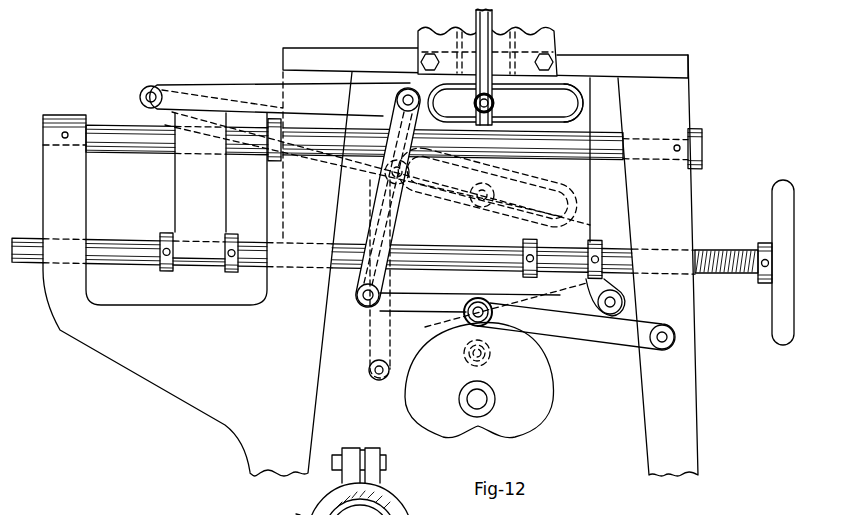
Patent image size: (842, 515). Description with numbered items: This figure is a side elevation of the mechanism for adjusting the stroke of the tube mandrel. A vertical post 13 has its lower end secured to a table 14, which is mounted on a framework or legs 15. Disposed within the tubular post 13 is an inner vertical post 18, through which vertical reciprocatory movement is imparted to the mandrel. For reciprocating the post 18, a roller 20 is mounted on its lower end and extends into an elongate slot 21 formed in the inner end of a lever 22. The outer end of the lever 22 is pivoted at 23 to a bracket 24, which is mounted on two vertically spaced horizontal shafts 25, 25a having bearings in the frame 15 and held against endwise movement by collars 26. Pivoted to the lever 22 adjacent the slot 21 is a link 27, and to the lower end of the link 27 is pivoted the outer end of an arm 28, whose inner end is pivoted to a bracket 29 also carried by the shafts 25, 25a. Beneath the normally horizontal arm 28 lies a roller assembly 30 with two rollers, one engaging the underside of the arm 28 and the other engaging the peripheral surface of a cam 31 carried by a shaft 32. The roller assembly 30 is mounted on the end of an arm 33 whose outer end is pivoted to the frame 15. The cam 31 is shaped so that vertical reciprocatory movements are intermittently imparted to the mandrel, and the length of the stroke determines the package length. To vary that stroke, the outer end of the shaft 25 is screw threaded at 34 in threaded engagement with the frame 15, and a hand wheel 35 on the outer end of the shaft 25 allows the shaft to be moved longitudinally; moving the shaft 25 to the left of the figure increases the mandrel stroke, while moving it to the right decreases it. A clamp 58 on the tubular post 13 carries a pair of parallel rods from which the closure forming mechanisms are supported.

The vertical post 13 is at (520, 32).
The table 14 is at (630, 58).
The frame 15 is at (688, 202).
The vertical post 18 is at (476, 20).
The roller 20 is at (496, 102).
The elongate slot 21 is at (578, 96).
The lever 22 is at (240, 96).
The pivot 23 is at (151, 86).
The bracket 24 is at (183, 197).
The horizontal shaft 25 is at (118, 266).
The horizontal shaft 25a is at (108, 148).
The collar 26 is at (229, 232).
The link 27 is at (372, 212).
The arm 28 is at (438, 292).
The bracket 29 is at (588, 196).
The roller assembly 30 is at (462, 290).
The cam 31 is at (546, 406).
The shaft 32 is at (470, 404).
The arm 33 is at (608, 336).
The screw thread 34 is at (719, 250).
The handle 35 is at (778, 178).
The clamp 58 is at (283, 513).